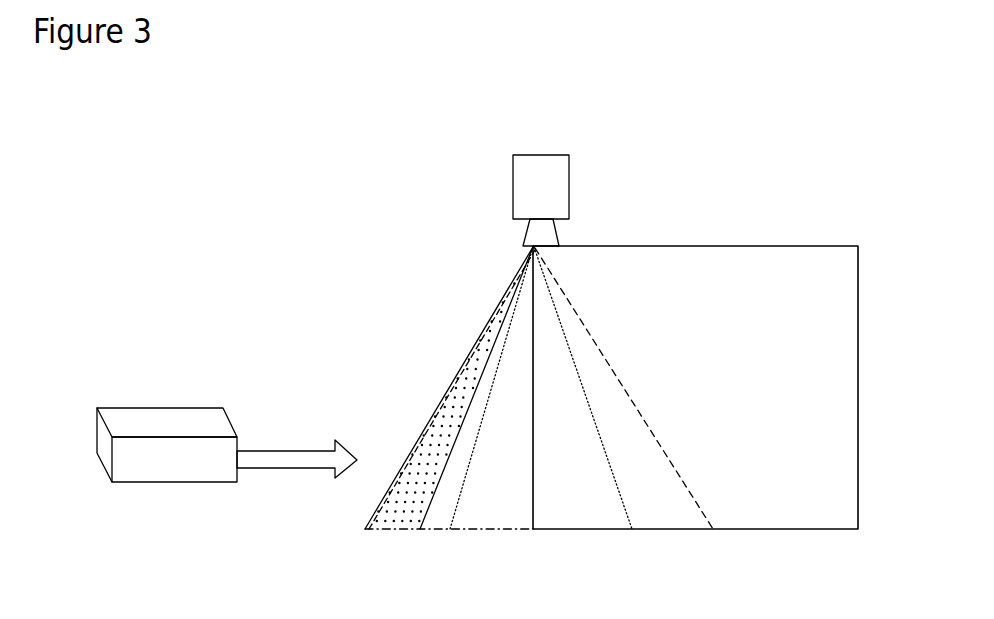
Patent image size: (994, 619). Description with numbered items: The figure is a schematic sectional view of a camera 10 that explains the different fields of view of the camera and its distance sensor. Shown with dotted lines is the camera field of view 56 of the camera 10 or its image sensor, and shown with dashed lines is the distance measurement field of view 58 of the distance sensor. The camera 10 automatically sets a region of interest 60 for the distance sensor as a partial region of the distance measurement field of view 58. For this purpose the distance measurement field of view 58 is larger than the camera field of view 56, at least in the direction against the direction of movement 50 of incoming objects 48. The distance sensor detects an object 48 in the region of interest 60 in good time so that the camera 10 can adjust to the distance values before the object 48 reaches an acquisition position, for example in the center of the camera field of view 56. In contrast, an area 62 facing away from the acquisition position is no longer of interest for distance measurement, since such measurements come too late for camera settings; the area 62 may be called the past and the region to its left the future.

The camera 10 is at (583, 178).
The object 48 is at (182, 406).
The direction of movement 50 is at (304, 387).
The camera field of view 56 is at (609, 426).
The distance measurement field of view 58 is at (632, 349).
The region of interest 60 is at (448, 426).
The area facing away from the acquisition position 62 is at (726, 335).